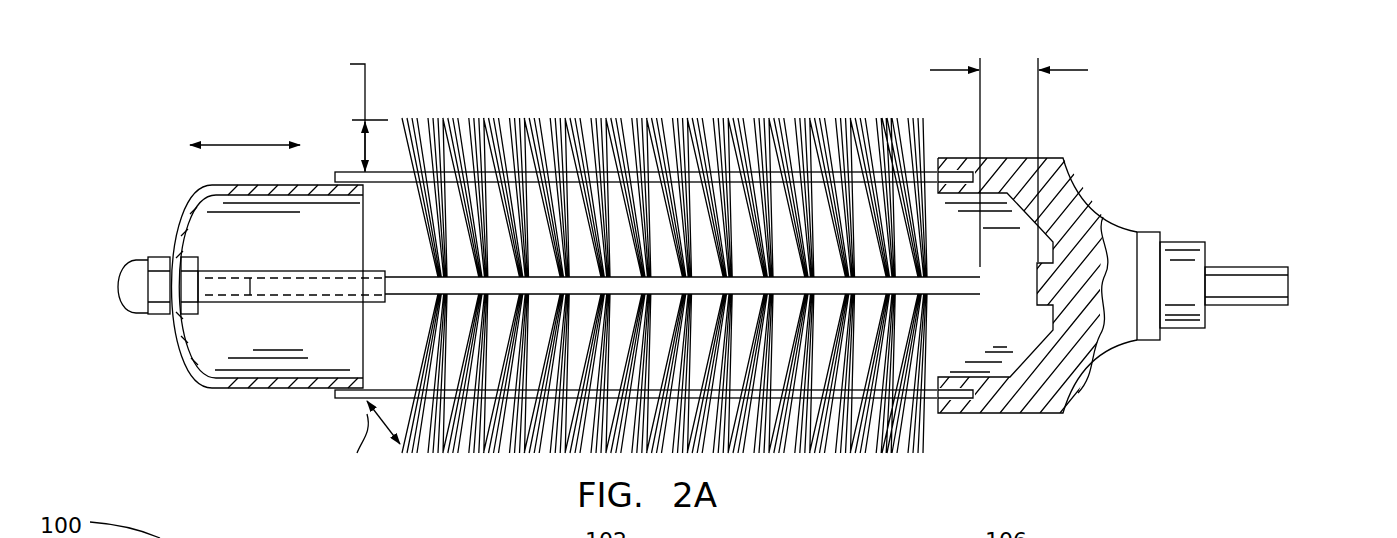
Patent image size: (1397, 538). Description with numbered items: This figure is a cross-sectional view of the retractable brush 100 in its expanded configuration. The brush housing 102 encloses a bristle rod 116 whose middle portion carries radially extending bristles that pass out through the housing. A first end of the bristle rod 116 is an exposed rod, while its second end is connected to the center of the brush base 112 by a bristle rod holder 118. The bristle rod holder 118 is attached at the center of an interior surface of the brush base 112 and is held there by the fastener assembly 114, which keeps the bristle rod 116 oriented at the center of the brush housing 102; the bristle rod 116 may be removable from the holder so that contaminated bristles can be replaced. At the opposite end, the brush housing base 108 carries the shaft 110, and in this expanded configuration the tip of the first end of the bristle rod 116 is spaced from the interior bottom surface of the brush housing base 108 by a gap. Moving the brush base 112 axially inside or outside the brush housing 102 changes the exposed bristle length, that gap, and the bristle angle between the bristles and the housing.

The retractable brush 100 is at (193, 95).
The brush housing 102 is at (950, 106).
The brush housing base 108 is at (1200, 424).
The shaft 110 is at (1260, 282).
The brush base 112 is at (360, 411).
The fastener assembly 114 is at (128, 298).
The bristle rod 116 is at (418, 277).
The bristle rod holder 118 is at (288, 282).